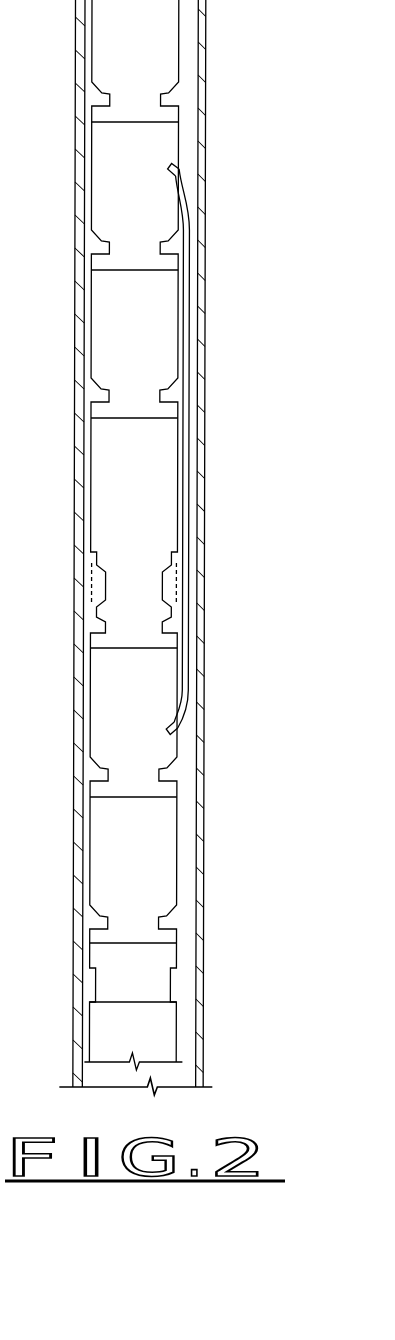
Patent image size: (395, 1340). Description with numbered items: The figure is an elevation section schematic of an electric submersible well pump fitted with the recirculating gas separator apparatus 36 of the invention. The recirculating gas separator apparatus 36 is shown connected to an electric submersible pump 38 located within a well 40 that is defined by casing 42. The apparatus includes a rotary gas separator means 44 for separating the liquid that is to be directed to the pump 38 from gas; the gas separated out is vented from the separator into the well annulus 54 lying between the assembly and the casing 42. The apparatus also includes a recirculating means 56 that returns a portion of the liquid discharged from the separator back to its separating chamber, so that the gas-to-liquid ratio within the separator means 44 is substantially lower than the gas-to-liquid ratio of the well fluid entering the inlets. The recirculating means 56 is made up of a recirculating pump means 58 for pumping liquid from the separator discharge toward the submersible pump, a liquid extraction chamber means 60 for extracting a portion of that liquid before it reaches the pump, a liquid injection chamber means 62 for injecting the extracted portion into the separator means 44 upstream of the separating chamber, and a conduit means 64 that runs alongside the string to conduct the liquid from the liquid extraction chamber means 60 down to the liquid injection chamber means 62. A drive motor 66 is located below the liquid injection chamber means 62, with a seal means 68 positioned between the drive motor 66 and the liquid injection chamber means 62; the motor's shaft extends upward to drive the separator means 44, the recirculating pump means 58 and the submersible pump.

The recirculating gas separator apparatus 36 is at (180, 547).
The electric submersible pump 38 is at (173, 535).
The well 40 is at (180, 547).
The casing 42 is at (203, 128).
The rotary gas separator means 44 is at (190, 449).
The well annulus 54 is at (187, 92).
The recirculating means 56 is at (190, 449).
The recirculating pump means 58 is at (157, 307).
The liquid extraction chamber means 60 is at (150, 163).
The liquid injection chamber means 62 is at (163, 753).
The conduit means 64 is at (185, 238).
The drive motor 66 is at (158, 962).
The seal means 68 is at (158, 875).